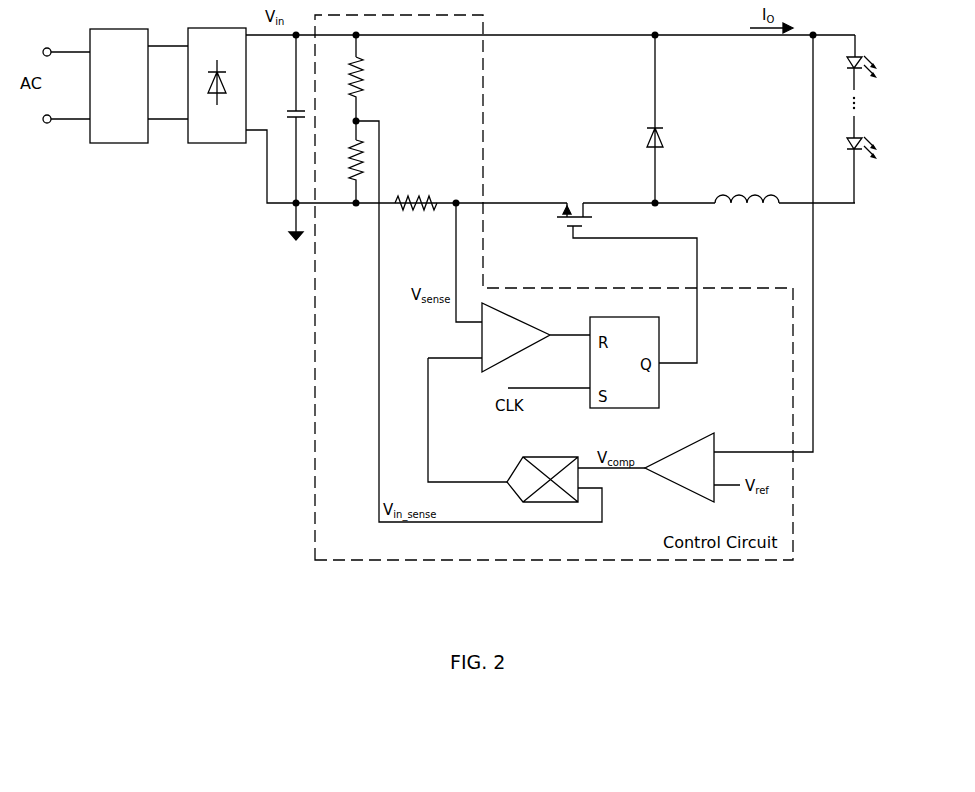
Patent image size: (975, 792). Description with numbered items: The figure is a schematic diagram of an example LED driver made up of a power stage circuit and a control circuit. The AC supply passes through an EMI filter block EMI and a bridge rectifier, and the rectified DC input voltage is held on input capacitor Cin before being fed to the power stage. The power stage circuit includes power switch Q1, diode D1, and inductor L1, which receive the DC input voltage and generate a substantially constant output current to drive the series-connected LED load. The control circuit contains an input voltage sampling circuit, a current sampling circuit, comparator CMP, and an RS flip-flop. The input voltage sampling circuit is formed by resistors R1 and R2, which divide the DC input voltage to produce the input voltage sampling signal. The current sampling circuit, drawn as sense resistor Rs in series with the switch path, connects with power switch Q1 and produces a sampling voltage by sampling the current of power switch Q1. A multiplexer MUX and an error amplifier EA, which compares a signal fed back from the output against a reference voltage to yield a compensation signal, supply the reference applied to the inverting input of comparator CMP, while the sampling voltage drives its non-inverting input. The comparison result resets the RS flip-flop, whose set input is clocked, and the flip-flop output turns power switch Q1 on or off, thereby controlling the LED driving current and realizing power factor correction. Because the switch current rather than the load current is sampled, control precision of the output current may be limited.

The EMI filter EMI is at (119, 86).
The input capacitor Cin is at (282, 119).
The resistor R1 is at (344, 78).
The resistor R2 is at (344, 162).
The current sense resistor Rs is at (416, 193).
The power switch Q1 is at (627, 271).
The diode D1 is at (642, 119).
The inductor L1 is at (747, 188).
The comparator CMP is at (509, 337).
The multiplexer MUX is at (542, 468).
The error amplifier EA is at (692, 467).